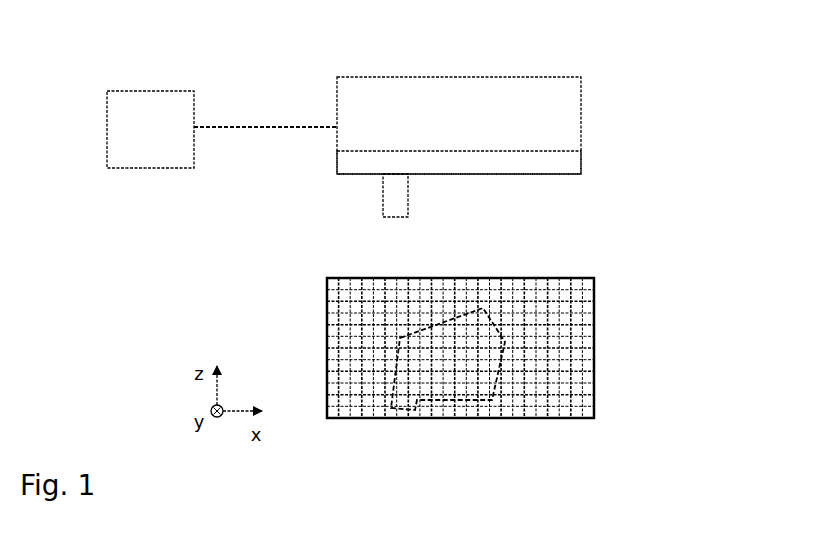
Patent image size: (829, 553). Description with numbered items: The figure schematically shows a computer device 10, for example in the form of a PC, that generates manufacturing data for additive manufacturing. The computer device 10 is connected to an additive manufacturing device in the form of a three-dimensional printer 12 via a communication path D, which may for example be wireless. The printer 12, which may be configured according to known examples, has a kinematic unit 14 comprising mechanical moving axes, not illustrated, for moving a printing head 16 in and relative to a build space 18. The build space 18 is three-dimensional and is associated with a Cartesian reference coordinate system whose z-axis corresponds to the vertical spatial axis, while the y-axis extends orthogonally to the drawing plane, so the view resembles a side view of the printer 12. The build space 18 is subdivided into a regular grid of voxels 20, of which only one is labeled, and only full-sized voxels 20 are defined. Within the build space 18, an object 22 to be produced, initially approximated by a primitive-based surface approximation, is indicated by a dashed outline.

The computer device 10 is at (150, 90).
The wireless communication path D is at (247, 122).
The 3D printer 12 is at (459, 76).
The kinematic unit 14 is at (530, 158).
The printing head 16 is at (381, 196).
The build space 18 is at (595, 300).
The voxels 20 is at (576, 382).
The object 22 is at (459, 400).